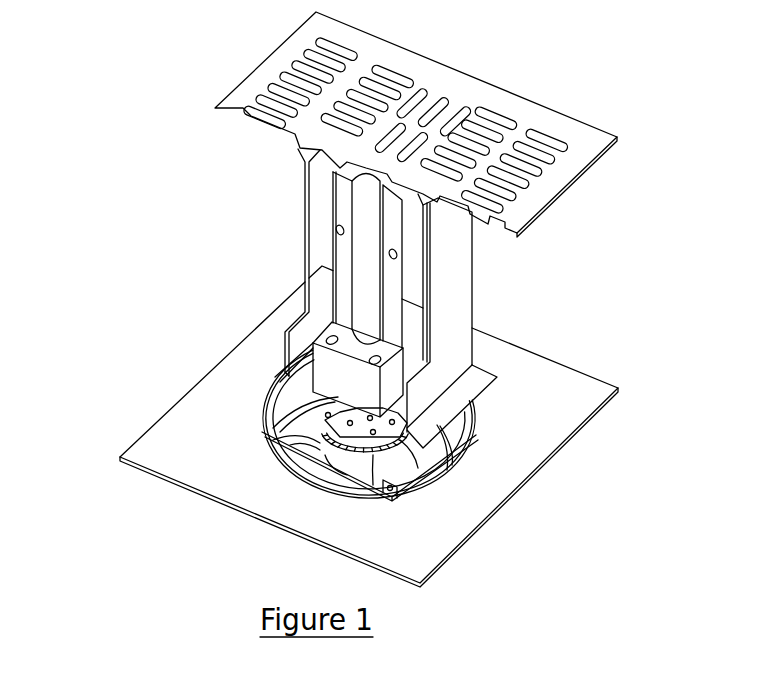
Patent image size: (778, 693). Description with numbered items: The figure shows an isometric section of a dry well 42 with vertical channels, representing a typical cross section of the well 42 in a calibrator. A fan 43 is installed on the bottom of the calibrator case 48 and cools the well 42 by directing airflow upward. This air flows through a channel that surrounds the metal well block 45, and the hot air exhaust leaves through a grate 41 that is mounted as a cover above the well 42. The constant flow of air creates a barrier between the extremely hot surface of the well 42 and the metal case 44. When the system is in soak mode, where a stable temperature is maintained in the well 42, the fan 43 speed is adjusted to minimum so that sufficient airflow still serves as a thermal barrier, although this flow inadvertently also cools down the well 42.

The grate 41 is at (215, 108).
The well 42 is at (320, 300).
The fan 43 is at (265, 425).
The metal case 44 is at (440, 288).
The metal well block 45 is at (327, 373).
The calibrator case 48 is at (507, 450).